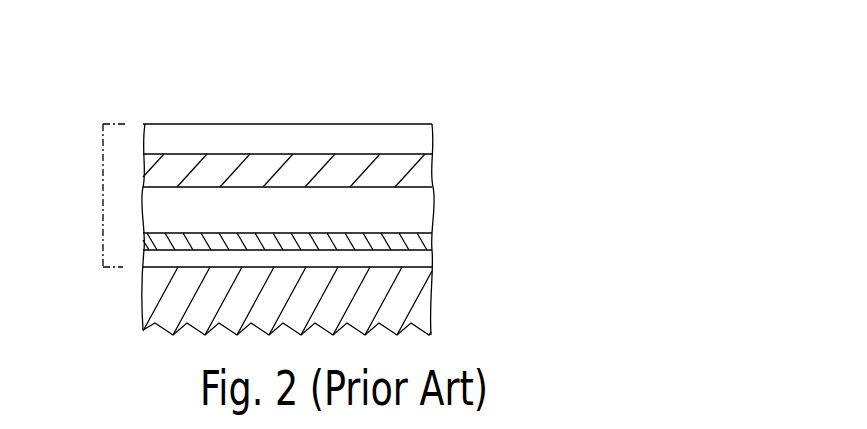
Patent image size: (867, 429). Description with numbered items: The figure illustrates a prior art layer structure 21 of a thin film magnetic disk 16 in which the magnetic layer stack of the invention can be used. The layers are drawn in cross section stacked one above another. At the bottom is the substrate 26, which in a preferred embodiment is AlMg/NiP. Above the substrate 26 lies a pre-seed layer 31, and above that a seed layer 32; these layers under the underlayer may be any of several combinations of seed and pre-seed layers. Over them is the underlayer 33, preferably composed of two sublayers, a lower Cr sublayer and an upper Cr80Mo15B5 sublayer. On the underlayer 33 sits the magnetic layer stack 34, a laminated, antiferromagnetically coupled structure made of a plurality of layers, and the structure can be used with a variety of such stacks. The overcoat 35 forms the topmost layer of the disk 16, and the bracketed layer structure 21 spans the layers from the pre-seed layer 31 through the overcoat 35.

The thin film magnetic disk 16 is at (192, 79).
The layer structure 21 is at (103, 193).
The substrate 26 is at (150, 293).
The pre-seed layer 31 is at (423, 260).
The seed layer 32 is at (433, 240).
The underlayer 33 is at (415, 213).
The magnetic layer stack 34 is at (422, 172).
The overcoat 35 is at (422, 131).